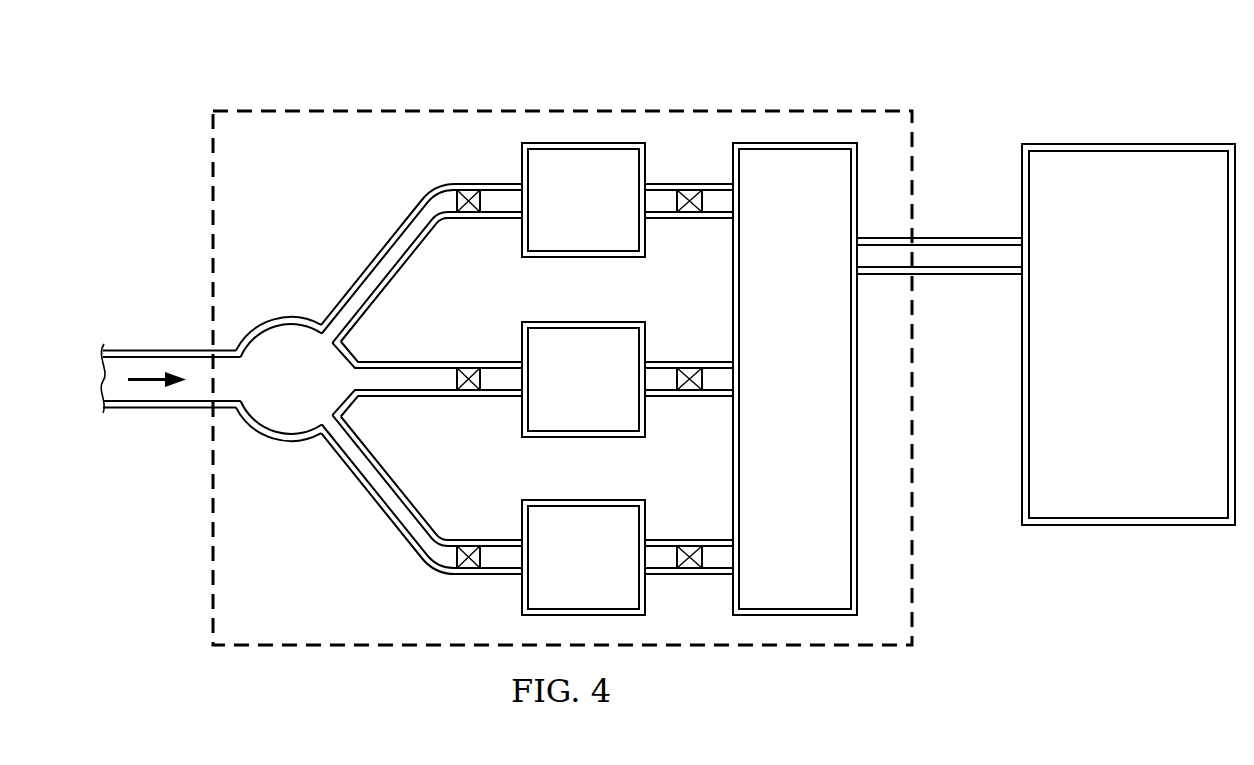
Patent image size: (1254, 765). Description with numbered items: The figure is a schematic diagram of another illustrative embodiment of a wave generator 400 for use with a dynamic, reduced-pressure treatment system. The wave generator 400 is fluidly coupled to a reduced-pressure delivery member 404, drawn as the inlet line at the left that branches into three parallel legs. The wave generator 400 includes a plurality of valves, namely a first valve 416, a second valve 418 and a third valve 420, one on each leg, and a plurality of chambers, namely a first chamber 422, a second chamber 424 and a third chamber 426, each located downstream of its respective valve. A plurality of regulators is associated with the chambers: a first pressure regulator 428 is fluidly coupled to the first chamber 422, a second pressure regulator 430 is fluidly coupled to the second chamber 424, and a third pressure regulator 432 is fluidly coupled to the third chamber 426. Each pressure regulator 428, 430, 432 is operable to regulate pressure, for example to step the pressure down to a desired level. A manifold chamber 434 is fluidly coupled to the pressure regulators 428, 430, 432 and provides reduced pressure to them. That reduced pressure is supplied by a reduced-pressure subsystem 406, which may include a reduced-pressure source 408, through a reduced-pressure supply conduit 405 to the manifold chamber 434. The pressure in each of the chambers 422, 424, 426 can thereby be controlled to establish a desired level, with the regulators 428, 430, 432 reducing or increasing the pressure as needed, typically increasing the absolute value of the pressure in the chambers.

The wave generator 400 is at (318, 108).
The reduced-pressure delivery member 404 is at (140, 350).
The reduced-pressure supply conduit 405 is at (940, 238).
The reduced-pressure subsystem 406 is at (1147, 135).
The reduced-pressure source 408 is at (1147, 350).
The first valve 416 is at (483, 212).
The second valve 418 is at (483, 390).
The third valve 420 is at (454, 566).
The first chamber 422 is at (605, 217).
The second chamber 424 is at (605, 396).
The third chamber 426 is at (605, 576).
The first pressure regulator 428 is at (710, 190).
The second pressure regulator 430 is at (710, 368).
The third pressure regulator 432 is at (710, 546).
The manifold chamber 434 is at (815, 395).